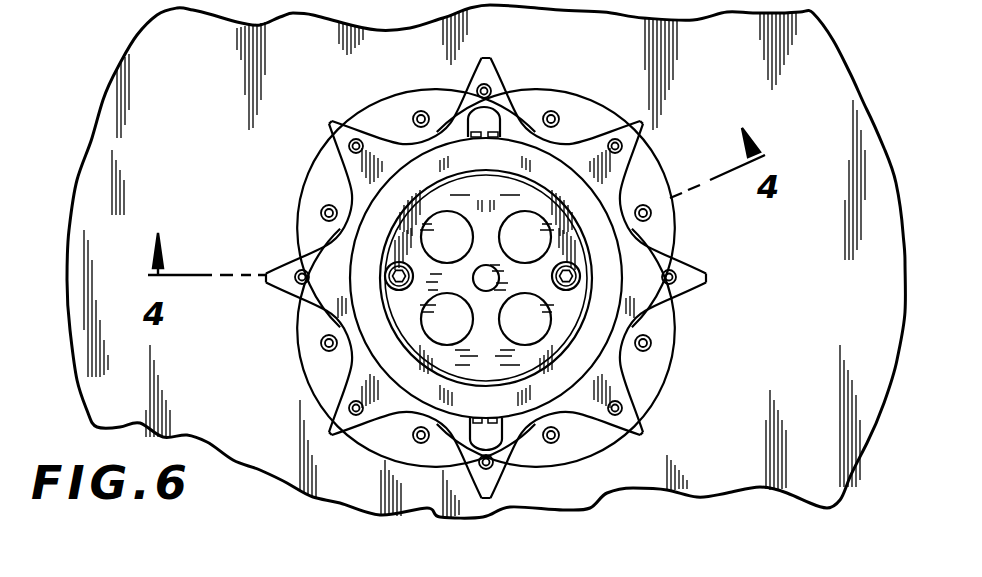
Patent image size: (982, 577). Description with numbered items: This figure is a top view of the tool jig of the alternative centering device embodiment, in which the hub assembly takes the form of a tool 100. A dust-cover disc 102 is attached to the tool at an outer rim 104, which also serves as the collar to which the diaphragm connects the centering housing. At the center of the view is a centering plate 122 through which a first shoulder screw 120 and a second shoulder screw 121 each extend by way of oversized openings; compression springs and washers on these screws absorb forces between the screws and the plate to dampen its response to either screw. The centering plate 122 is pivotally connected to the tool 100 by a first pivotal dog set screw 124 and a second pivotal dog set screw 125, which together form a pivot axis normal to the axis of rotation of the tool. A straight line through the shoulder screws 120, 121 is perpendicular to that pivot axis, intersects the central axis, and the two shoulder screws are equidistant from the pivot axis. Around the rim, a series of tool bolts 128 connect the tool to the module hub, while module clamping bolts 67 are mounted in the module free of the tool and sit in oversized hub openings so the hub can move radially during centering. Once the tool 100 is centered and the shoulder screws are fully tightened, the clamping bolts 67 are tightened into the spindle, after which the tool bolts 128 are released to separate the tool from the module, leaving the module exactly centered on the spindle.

The dust-cover disc 102 is at (205, 127).
The outer rim 104 is at (327, 190).
The tool 100 is at (604, 375).
The centering plate 122 is at (502, 204).
The first shoulder screw 120 is at (386, 277).
The second shoulder screw 121 is at (578, 276).
The second pivotal dog set screw 125 is at (498, 124).
The first pivotal dog set screw 124 is at (470, 442).
The module clamping bolts 67 is at (553, 112).
The tool bolts 128 is at (354, 138).